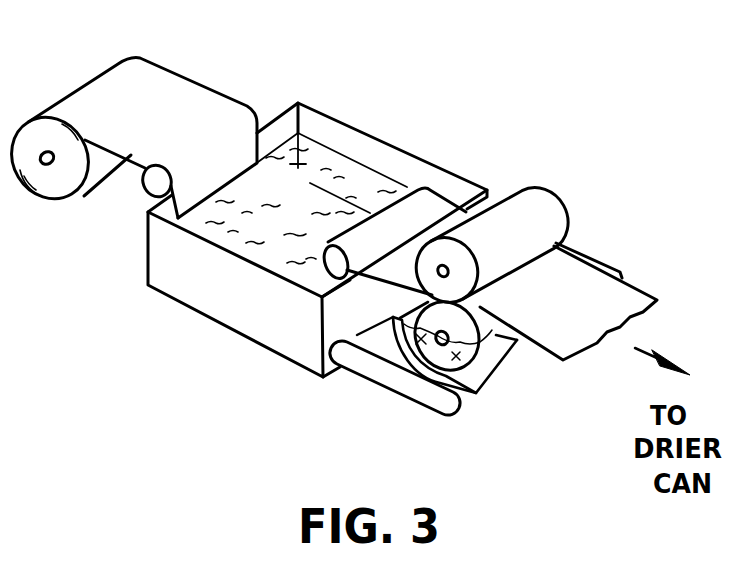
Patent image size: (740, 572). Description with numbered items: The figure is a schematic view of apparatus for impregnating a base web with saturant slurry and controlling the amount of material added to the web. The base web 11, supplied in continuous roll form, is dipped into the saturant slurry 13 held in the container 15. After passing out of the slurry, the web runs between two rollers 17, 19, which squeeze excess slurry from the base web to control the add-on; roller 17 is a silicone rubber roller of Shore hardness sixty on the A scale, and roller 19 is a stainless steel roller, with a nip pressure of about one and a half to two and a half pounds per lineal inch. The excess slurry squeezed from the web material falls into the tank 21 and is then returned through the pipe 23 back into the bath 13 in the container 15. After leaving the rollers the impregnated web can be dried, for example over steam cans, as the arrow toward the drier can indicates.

The base web 11 is at (152, 87).
The saturant slurry 13 is at (370, 184).
The container 15 is at (185, 292).
The silicone rubber roller 17 is at (537, 205).
The stainless steel roller 19 is at (513, 340).
The tank 21 is at (458, 378).
The pipe 23 is at (387, 378).